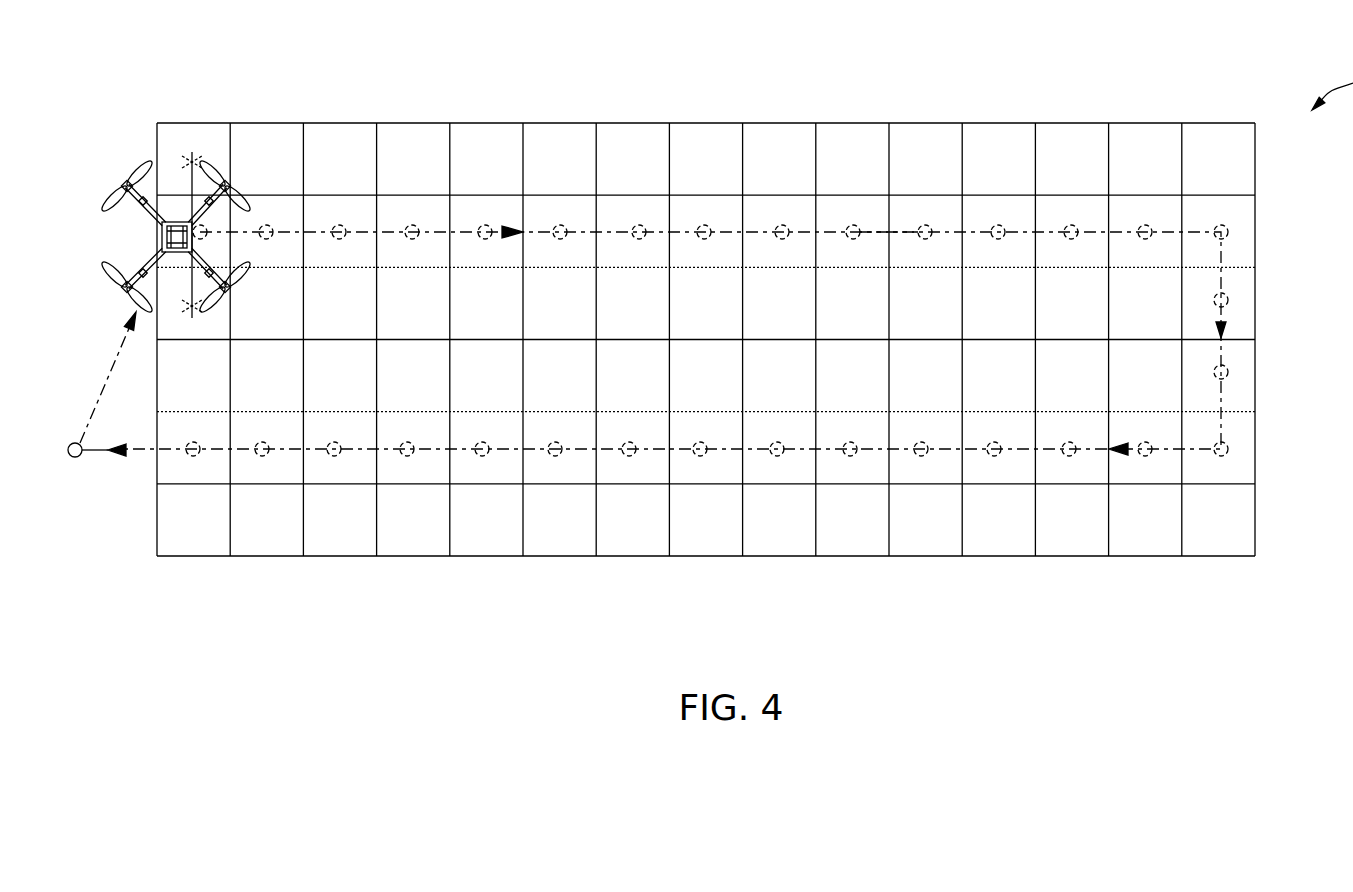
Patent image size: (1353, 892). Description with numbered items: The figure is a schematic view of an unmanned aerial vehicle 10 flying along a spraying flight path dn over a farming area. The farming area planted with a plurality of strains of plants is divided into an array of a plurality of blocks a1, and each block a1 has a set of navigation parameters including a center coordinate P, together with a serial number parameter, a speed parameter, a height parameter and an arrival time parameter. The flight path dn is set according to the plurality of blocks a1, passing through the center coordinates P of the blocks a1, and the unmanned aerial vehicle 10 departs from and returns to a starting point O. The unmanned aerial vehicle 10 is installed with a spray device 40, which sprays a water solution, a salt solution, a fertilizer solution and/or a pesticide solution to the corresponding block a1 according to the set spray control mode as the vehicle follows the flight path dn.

The unmanned aerial vehicle 10 is at (99, 266).
The spray device 40 is at (188, 158).
The center coordinate P is at (637, 231).
The flight path dn is at (879, 231).
The block a1 is at (1249, 154).
The origin point O is at (63, 450).